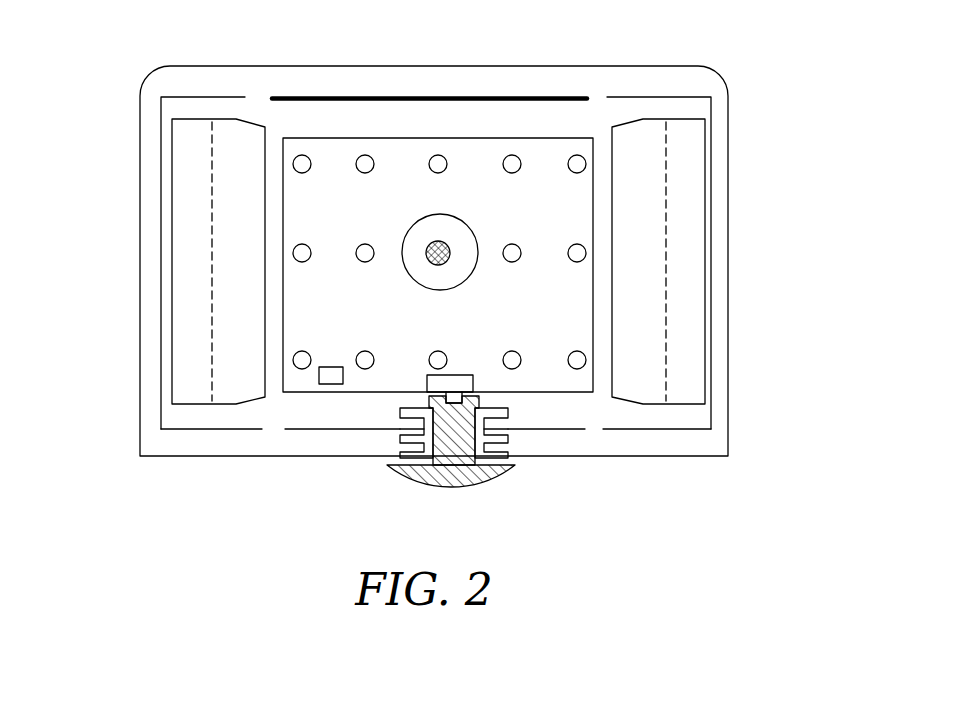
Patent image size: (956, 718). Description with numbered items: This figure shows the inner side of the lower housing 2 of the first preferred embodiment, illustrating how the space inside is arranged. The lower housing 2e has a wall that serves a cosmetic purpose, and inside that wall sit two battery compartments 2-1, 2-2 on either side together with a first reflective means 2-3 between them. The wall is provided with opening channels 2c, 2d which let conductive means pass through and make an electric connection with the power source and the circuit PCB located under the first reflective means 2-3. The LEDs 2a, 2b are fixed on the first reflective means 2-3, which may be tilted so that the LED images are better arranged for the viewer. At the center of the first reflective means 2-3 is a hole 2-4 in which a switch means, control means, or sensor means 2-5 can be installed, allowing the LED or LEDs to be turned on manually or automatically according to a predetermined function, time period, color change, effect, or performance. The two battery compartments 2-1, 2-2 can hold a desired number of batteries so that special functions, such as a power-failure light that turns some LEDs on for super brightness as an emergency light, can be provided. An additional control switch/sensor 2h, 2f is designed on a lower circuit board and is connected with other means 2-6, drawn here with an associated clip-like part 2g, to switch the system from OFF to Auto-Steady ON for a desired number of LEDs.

The lower housing 2 is at (157, 442).
The battery compartment 2-1 is at (193, 170).
The battery compartment 2-2 is at (688, 175).
The first reflective means 2-3 is at (352, 147).
The hole 2-4 is at (417, 235).
The switch means, control means, or sensor means 2-5 is at (432, 262).
The other means 2-6 is at (458, 487).
The LED 2a is at (303, 156).
The LED 2b is at (513, 156).
The opening channel 2c is at (258, 98).
The opening channel 2d is at (595, 100).
The lower housing 2e is at (423, 83).
The additional control switch/sensor 2f is at (470, 381).
The clamping bracket 2g is at (400, 412).
The additional control switch/sensor 2h is at (332, 385).